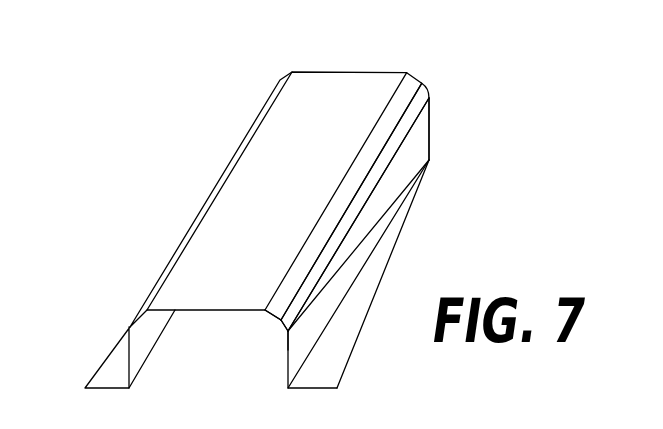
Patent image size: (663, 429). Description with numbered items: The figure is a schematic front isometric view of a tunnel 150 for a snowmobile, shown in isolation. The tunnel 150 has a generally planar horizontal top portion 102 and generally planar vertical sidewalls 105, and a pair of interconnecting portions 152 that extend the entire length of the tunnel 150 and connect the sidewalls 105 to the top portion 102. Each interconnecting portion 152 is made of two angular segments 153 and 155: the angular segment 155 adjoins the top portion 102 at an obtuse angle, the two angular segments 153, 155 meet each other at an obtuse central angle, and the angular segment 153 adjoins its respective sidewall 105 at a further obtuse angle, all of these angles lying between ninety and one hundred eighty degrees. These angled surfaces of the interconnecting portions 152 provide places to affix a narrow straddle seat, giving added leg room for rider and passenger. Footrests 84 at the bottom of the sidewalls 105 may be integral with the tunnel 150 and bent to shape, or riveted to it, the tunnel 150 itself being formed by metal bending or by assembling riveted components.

The tunnel 150 is at (294, 198).
The top portion 102 is at (348, 80).
The interconnecting portions 152 is at (160, 282).
The footrests 84 is at (118, 376).
The sidewalls 105 is at (407, 156).
The angular segment 155 is at (348, 205).
The angular segment 153 is at (332, 242).